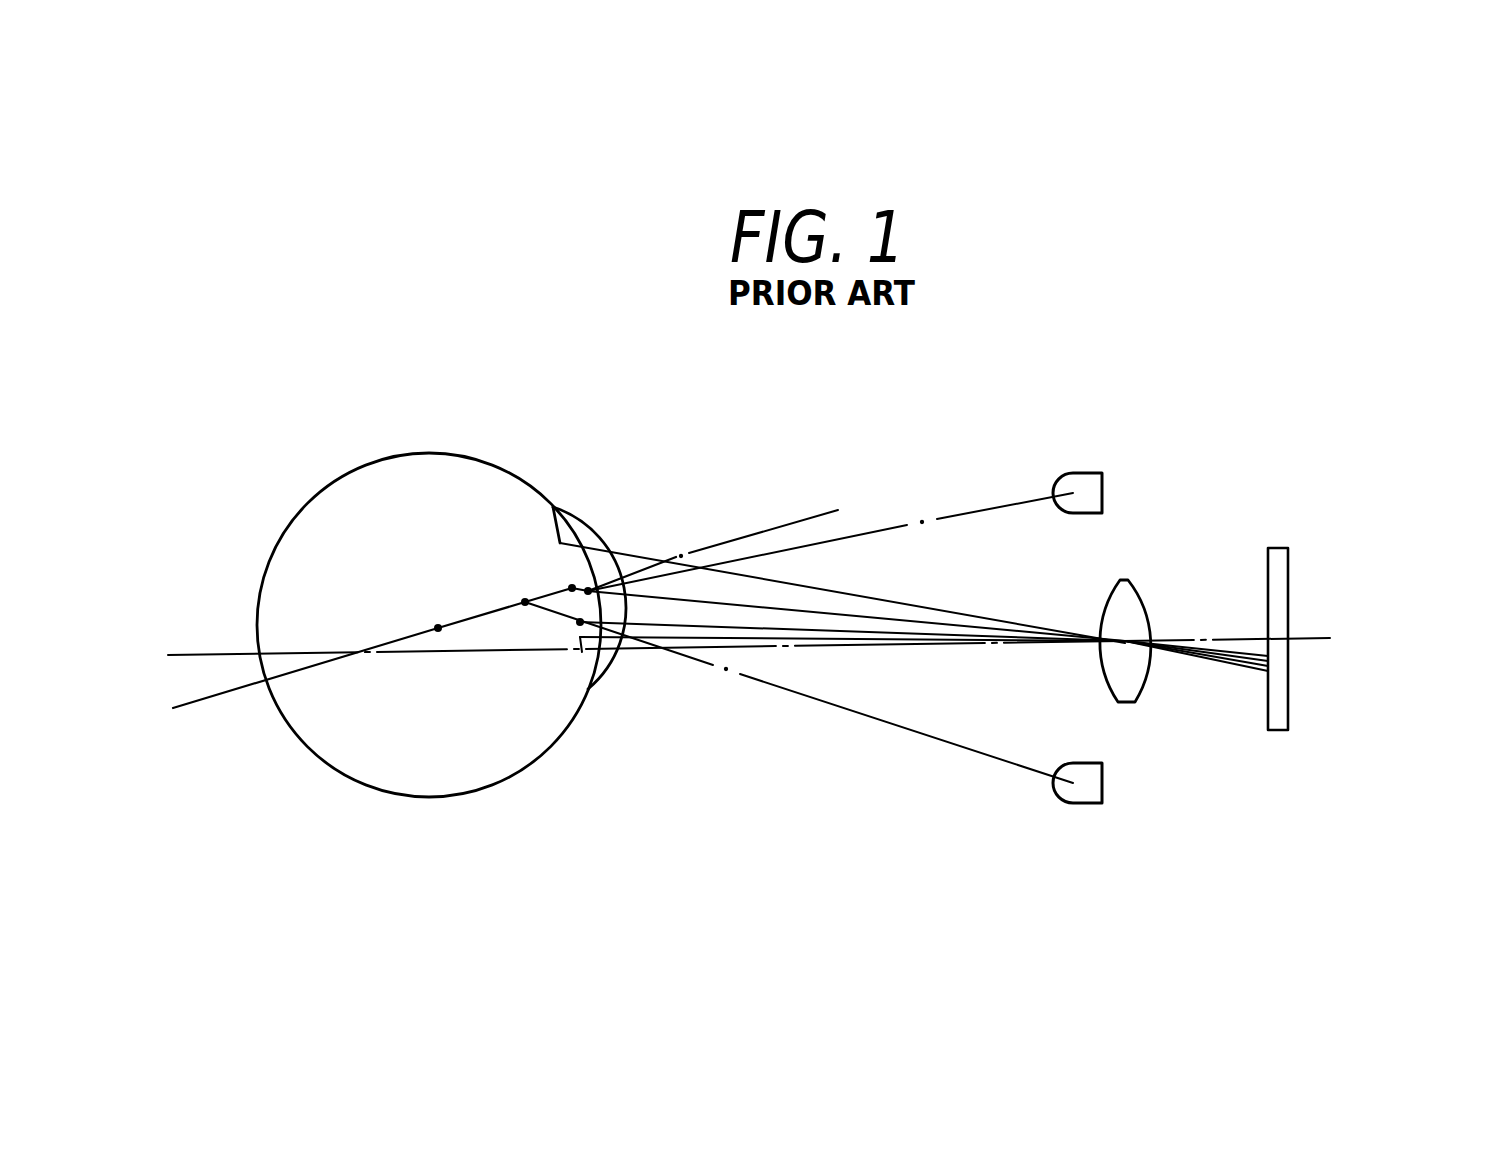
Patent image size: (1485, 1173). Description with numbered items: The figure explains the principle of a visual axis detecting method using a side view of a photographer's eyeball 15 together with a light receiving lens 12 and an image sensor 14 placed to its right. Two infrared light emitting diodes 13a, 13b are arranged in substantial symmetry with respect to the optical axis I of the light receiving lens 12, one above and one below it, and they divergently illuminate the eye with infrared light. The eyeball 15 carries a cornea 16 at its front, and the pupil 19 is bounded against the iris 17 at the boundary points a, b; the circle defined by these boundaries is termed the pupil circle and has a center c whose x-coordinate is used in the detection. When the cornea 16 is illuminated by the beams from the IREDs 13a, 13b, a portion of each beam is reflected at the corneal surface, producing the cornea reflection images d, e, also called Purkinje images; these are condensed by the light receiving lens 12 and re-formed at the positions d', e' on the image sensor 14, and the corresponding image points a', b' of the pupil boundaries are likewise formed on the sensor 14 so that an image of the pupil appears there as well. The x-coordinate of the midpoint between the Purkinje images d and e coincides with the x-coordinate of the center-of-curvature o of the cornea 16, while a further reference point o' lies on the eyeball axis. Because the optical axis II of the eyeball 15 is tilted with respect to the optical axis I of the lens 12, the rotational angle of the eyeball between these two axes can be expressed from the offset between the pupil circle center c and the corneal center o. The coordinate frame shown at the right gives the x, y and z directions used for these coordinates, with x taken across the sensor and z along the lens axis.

The light receiving lens 12 is at (1143, 683).
The infrared light emitting diode 13a is at (1093, 804).
The infrared light emitting diode 13b is at (1093, 472).
The image sensor 14 is at (1280, 548).
The eyeball 15 is at (460, 797).
The cornea 16 is at (585, 522).
The iris 17 is at (553, 505).
The pupil 19 is at (603, 540).
The center-of-curvature of the cornea o is at (518, 585).
The reference point on visual axis o' is at (437, 612).
The center of the pupil circle c is at (579, 574).
The boundary between pupil and iris a is at (546, 563).
The boundary between pupil and iris b is at (591, 696).
The cornea reflection image d is at (514, 647).
The cornea reflection image e is at (551, 660).
The image of point a a' is at (1243, 699).
The image of point b b' is at (1243, 604).
The re-formed position of cornea reflection image d d' is at (1297, 693).
The re-formed position of cornea reflection image e e' is at (1295, 661).
The optical axis of the light receiving lens I is at (645, 650).
The optical axis of the eyeball II is at (793, 522).
The x axis x is at (1452, 628).
The y axis y is at (1452, 651).
The z axis z is at (1440, 633).